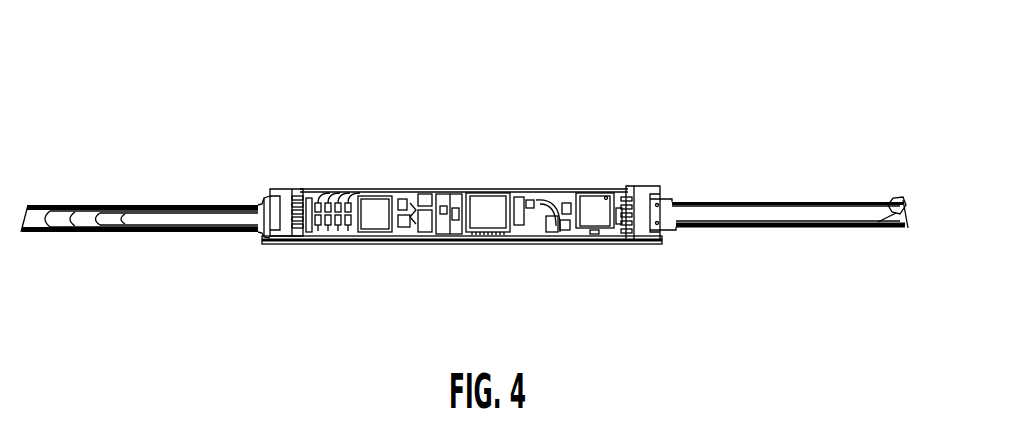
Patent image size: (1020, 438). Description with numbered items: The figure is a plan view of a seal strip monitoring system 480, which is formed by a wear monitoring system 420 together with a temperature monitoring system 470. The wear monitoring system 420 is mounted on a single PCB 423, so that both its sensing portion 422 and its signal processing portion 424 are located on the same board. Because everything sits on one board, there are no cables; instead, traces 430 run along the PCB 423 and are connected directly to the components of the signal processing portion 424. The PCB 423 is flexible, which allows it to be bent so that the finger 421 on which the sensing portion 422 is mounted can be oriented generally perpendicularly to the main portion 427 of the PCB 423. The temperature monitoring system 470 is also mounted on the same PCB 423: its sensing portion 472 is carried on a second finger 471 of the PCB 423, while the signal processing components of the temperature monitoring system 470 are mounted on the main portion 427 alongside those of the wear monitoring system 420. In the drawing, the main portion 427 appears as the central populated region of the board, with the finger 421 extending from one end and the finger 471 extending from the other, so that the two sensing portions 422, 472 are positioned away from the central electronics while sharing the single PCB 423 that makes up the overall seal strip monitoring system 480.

The wear monitoring system 420 is at (737, 112).
The finger 421 is at (105, 205).
The sensing portion 422 is at (268, 112).
The PCB 423 is at (588, 197).
The signal processing portion 424 is at (358, 135).
The main portion 427 is at (425, 242).
The traces 430 is at (156, 205).
The temperature monitoring system 470 is at (827, 168).
The finger 471 is at (735, 230).
The sensing portion 472 is at (818, 230).
The seal strip monitoring system 480 is at (563, 260).